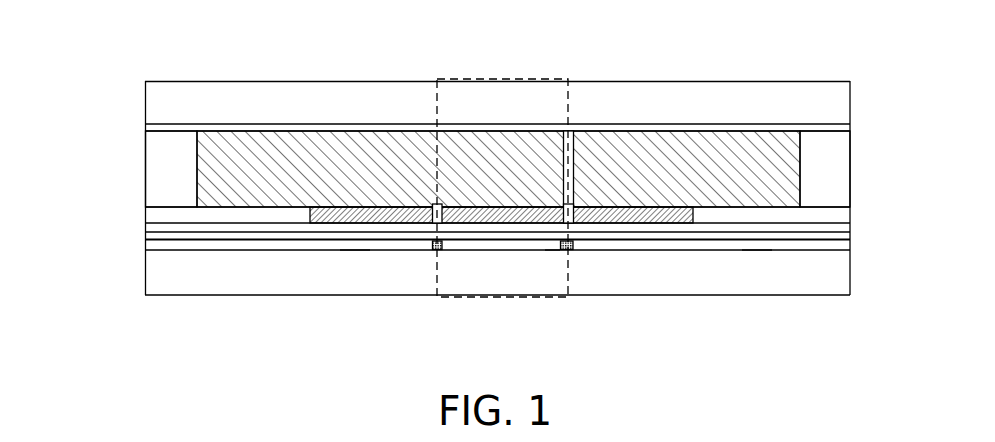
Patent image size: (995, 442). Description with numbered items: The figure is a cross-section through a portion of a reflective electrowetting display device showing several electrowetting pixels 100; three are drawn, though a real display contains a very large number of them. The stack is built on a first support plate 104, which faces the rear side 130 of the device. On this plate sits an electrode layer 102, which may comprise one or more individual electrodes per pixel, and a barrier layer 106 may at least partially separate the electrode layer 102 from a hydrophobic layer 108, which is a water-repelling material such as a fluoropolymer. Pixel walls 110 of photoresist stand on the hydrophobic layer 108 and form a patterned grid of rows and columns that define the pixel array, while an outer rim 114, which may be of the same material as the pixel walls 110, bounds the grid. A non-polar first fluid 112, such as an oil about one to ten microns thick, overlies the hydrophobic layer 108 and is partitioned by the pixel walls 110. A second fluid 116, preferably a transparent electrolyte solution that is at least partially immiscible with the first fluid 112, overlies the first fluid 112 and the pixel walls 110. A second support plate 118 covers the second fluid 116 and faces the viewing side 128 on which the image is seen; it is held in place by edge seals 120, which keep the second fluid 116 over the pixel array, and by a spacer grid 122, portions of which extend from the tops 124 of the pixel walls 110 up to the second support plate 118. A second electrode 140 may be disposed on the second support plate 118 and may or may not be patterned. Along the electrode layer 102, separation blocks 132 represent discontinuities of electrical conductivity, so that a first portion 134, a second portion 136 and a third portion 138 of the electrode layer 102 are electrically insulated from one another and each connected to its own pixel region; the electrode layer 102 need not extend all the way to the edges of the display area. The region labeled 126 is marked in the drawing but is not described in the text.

The electrowetting pixels 100 is at (437, 283).
The electrode layer 102 is at (146, 245).
The first support plate 104 is at (222, 286).
The barrier layer 106 is at (146, 237).
The hydrophobic layer 108 is at (146, 228).
The pixel walls 110 is at (442, 222).
The first fluid 112 is at (625, 223).
The outer rim 114 is at (146, 211).
The second fluid 116 is at (303, 180).
The second support plate 118 is at (222, 116).
The edge seals 120 is at (188, 176).
The spacer grid 122 is at (575, 147).
The tops of pixel walls 124 is at (432, 206).
The region indicator 126 is at (427, 137).
The viewing side 128 is at (603, 42).
The rear side 130 is at (276, 321).
The separation block 132 is at (430, 248).
The first portion of electrode layer 134 is at (355, 252).
The second portion of electrode layer 136 is at (553, 252).
The third portion of electrode layer 138 is at (757, 252).
The second electrode 140 is at (253, 124).